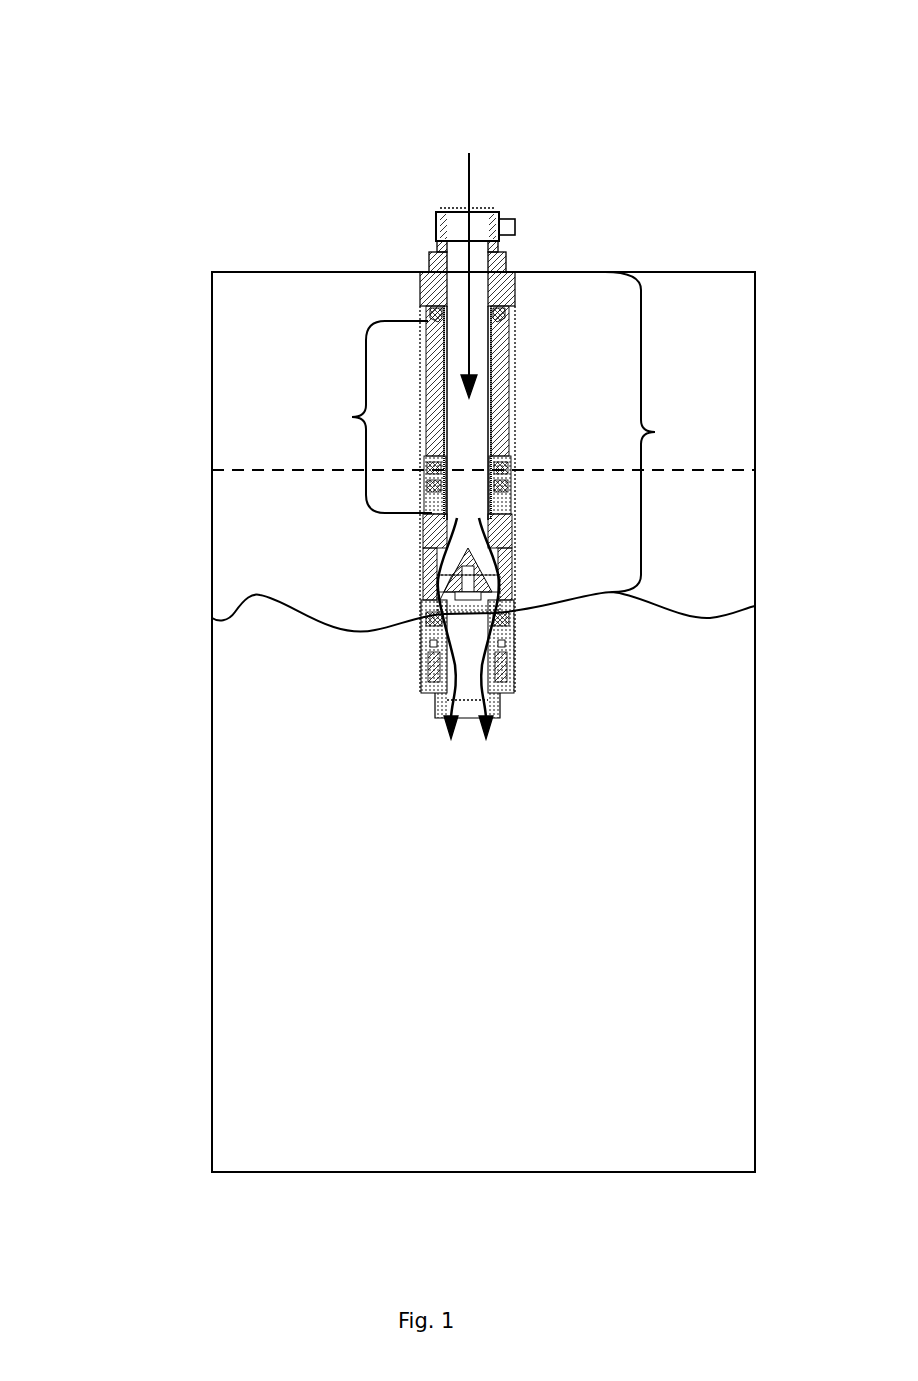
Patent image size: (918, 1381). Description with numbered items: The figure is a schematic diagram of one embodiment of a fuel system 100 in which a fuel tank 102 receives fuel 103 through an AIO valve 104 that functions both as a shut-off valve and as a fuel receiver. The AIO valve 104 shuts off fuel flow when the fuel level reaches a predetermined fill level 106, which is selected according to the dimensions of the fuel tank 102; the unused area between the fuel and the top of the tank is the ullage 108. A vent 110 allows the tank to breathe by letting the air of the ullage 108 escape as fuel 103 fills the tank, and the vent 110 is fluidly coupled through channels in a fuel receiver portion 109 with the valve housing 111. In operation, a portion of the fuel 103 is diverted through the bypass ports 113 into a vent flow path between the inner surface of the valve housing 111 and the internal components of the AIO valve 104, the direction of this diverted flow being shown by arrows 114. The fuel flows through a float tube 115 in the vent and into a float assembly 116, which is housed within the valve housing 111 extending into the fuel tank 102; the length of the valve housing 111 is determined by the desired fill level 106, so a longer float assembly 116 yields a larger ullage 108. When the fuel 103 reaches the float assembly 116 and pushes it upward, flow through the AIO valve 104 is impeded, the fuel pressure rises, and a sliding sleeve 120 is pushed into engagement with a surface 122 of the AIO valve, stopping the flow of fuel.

The fuel system 100 is at (96, 72).
The fuel tank 102 is at (295, 272).
The fuel 103 is at (404, 891).
The AIO valve 104 is at (376, 219).
The predetermined fill level 106 is at (254, 470).
The ullage 108 is at (655, 432).
The fuel receiver portion 109 is at (428, 252).
The vent 110 is at (515, 228).
The valve housing 111 is at (513, 358).
The bypass ports 113 is at (500, 572).
The arrows 114 is at (469, 170).
The float tube 115 is at (498, 320).
The float assembly 116 is at (371, 417).
The sliding sleeve 120 is at (503, 612).
The surface 122 is at (438, 604).